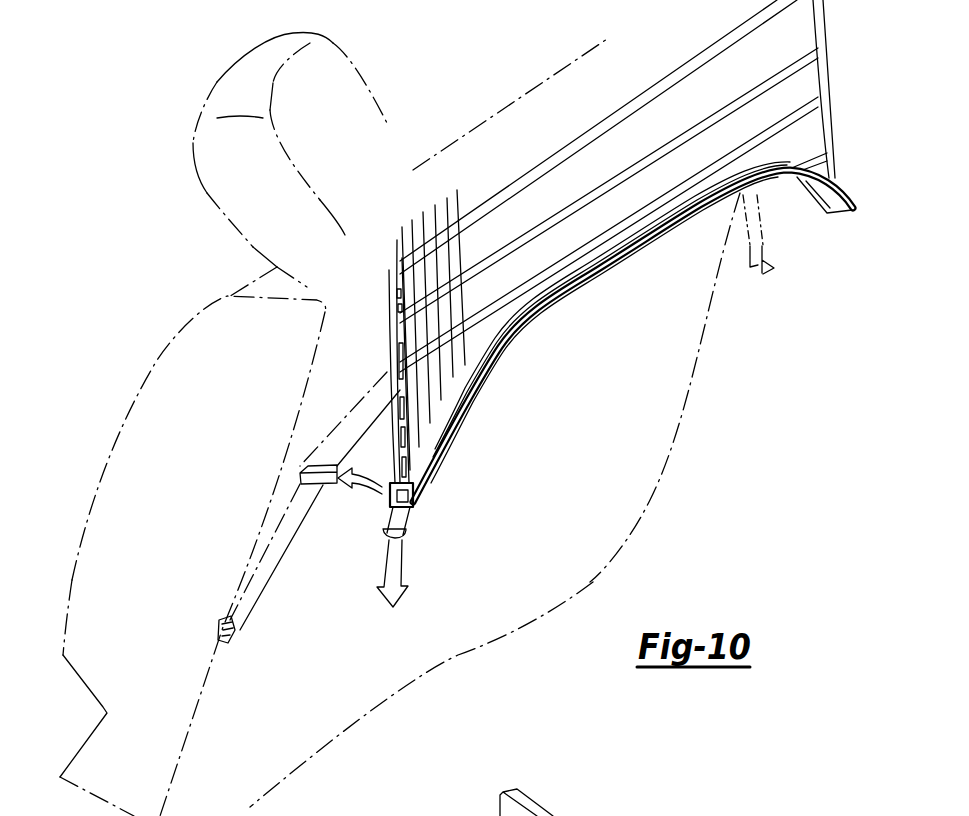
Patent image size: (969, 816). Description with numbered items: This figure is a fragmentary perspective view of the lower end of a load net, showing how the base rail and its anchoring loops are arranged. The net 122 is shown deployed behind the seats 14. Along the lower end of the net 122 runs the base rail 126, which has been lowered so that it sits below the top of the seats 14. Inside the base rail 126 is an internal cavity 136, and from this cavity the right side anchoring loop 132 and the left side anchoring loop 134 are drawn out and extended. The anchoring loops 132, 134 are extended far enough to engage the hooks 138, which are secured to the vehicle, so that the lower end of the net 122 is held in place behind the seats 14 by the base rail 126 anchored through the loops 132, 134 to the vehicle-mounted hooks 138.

The seats 14 is at (210, 345).
The net 122 is at (476, 309).
The base rail 126 is at (493, 348).
The right side anchoring loop 132 is at (763, 247).
The left side anchoring loop 134 is at (252, 600).
The internal cavity 136 is at (416, 492).
The hooks 138 is at (213, 627).